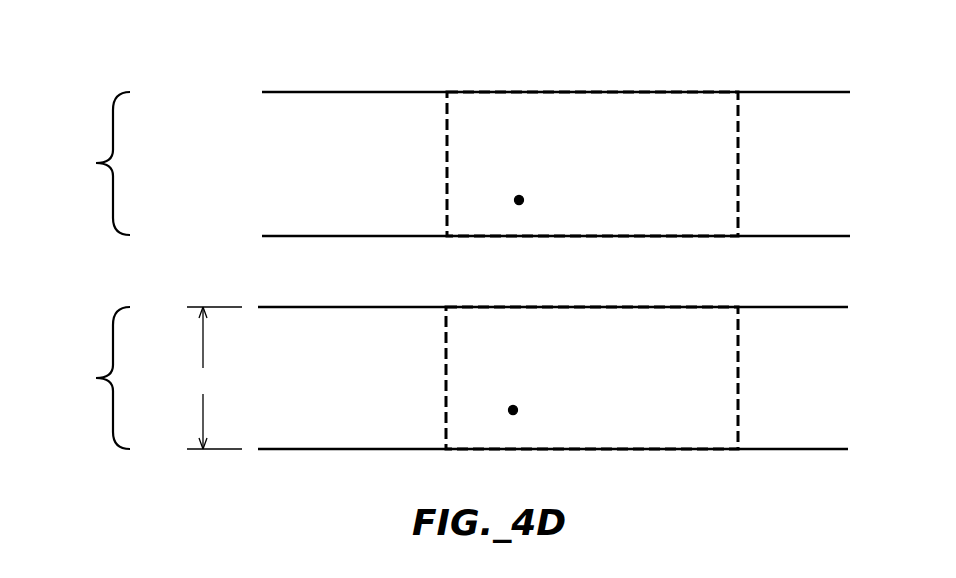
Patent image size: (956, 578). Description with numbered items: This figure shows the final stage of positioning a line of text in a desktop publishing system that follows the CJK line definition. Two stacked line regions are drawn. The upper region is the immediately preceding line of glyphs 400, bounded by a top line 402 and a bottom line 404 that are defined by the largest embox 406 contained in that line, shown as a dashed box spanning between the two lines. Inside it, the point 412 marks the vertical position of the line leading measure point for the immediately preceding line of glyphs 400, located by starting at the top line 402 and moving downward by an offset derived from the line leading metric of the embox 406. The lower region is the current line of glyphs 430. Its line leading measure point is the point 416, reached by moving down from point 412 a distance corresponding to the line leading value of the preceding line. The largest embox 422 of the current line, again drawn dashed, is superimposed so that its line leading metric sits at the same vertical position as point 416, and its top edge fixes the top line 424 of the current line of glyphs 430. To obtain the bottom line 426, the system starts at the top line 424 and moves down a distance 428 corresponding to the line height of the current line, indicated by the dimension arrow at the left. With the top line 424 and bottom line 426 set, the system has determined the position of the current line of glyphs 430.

The immediately preceding line of glyphs 400 is at (81, 163).
The top line 402 is at (375, 92).
The bottom line 404 is at (375, 236).
The largest embox 406 is at (756, 148).
The point 412 is at (519, 200).
The point 416 is at (513, 410).
The largest embox 422 is at (756, 363).
The top line 424 is at (372, 307).
The bottom line 426 is at (370, 449).
The distance 428 is at (213, 378).
The current line of glyphs 430 is at (79, 378).